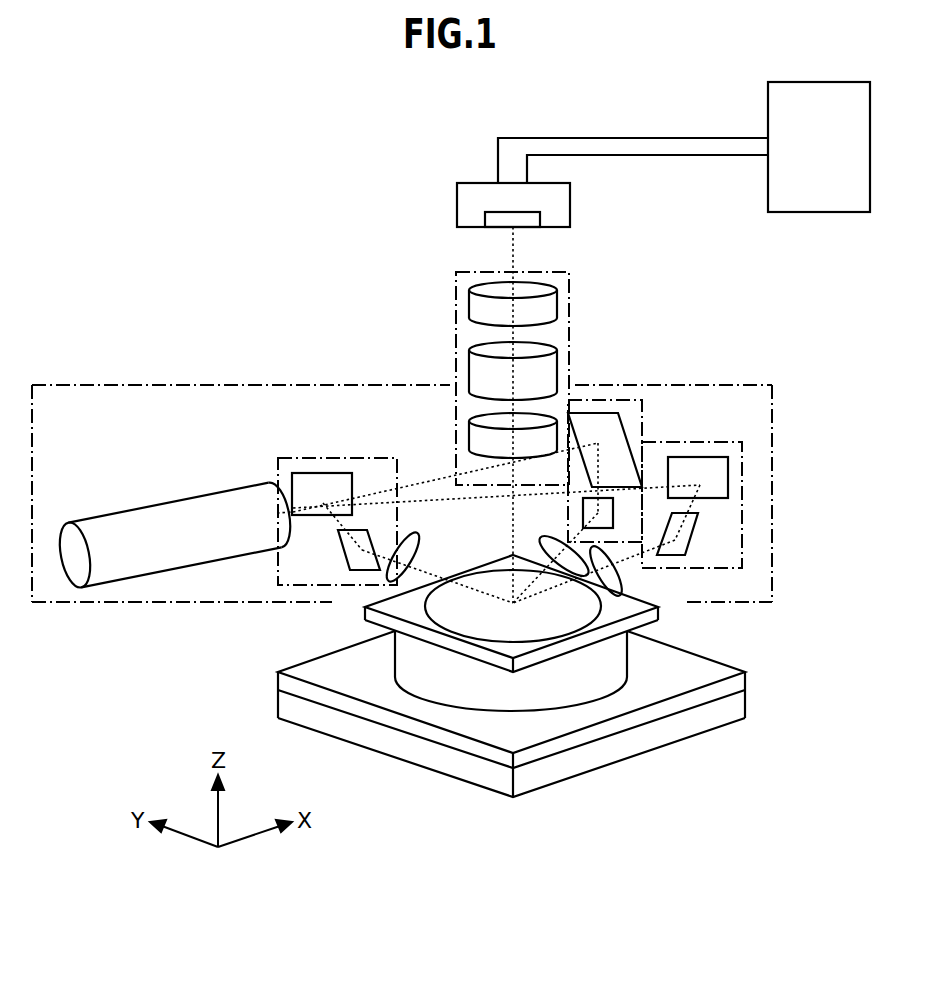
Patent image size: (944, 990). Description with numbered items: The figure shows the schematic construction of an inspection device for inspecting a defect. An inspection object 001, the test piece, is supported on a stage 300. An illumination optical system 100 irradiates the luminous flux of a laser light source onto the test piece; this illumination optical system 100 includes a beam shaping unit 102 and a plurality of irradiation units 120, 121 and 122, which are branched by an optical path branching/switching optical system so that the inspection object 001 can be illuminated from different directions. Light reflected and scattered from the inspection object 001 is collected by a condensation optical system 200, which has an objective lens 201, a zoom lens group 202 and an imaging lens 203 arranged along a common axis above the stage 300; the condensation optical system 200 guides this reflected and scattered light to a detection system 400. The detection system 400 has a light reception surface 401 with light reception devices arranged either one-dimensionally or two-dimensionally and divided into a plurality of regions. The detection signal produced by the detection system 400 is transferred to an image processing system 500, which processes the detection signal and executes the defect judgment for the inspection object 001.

The illumination optical system 100 is at (98, 383).
The beam shaping unit 102 is at (382, 578).
The irradiation unit 120 is at (678, 442).
The irradiation unit 121 is at (610, 397).
The irradiation unit 122 is at (320, 457).
The condensation optical system 200 is at (458, 271).
The objective lens 201 is at (468, 430).
The zoom lens group 202 is at (468, 357).
The imaging lens 203 is at (468, 302).
The stage 300 is at (278, 700).
The detection system 400 is at (472, 183).
The light reception surface 401 is at (485, 220).
The image processing system 500 is at (820, 82).
The inspection object 001 is at (592, 612).